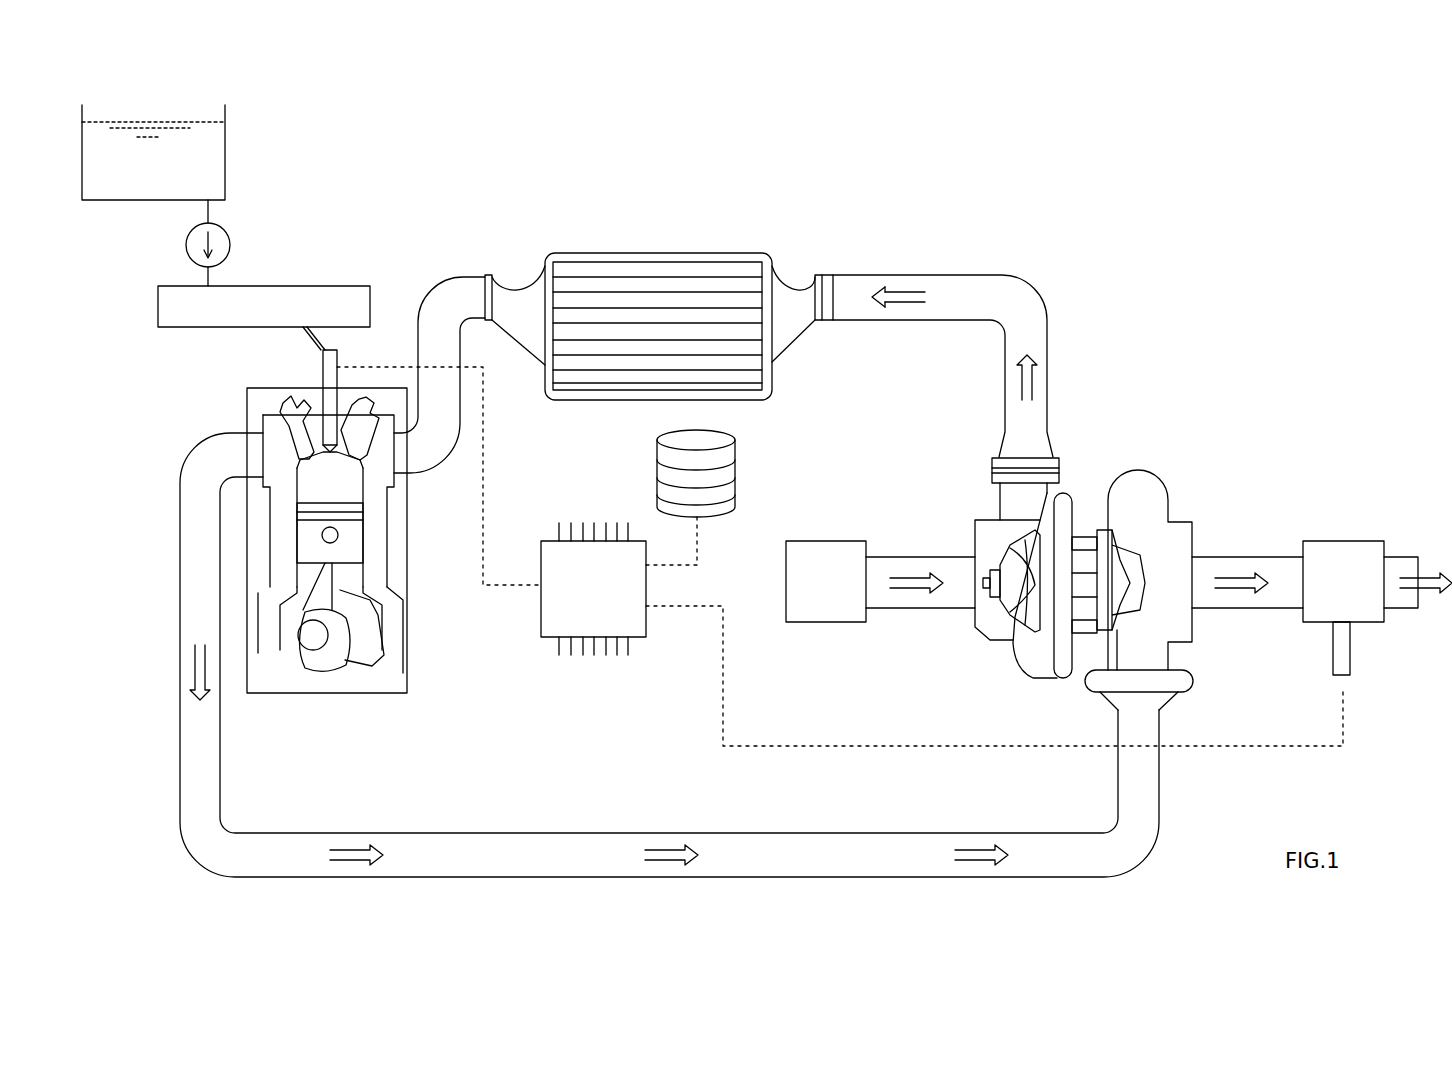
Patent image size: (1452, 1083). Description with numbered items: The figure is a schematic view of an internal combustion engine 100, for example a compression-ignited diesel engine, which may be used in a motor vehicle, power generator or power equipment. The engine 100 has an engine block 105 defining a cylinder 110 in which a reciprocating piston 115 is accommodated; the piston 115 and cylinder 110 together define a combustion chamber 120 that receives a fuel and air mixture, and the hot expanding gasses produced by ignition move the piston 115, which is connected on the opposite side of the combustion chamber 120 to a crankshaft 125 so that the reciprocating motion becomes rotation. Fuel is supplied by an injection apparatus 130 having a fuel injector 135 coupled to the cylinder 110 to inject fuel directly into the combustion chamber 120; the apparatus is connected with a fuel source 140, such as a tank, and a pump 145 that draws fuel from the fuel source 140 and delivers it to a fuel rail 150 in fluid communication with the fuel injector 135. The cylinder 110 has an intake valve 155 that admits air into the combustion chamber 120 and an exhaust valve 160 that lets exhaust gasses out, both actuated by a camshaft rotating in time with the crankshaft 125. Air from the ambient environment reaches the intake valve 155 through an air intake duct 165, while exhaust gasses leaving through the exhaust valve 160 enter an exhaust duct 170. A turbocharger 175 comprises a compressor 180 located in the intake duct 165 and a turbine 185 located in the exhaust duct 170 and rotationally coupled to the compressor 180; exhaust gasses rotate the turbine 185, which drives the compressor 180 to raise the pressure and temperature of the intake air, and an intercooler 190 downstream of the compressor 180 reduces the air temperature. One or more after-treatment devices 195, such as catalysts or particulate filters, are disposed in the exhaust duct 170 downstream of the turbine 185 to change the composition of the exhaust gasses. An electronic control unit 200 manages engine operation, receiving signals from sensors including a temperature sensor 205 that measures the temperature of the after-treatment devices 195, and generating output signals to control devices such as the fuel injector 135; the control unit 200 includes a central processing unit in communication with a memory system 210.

The internal combustion engine 100 is at (438, 702).
The engine block 105 is at (278, 525).
The cylinder 110 is at (289, 482).
The piston 115 is at (316, 548).
The combustion chamber 120 is at (352, 500).
The crankshaft 125 is at (313, 640).
The injection apparatus 130 is at (325, 210).
The fuel injector 135 is at (340, 367).
The fuel source 140 is at (143, 185).
The pump 145 is at (217, 242).
The fuel rail 150 is at (318, 300).
The intake valve 155 is at (357, 430).
The exhaust valve 160 is at (298, 432).
The air intake duct 165 is at (1020, 302).
The exhaust duct 170 is at (557, 865).
The turbocharger 175 is at (1098, 470).
The compressor 180 is at (1027, 648).
The turbine 185 is at (1155, 505).
The intercooler 190 is at (645, 277).
The after-treatment devices 195 is at (1338, 555).
The electronic control unit 200 is at (590, 615).
The temperature sensor 205 is at (1350, 652).
The memory system 210 is at (737, 470).